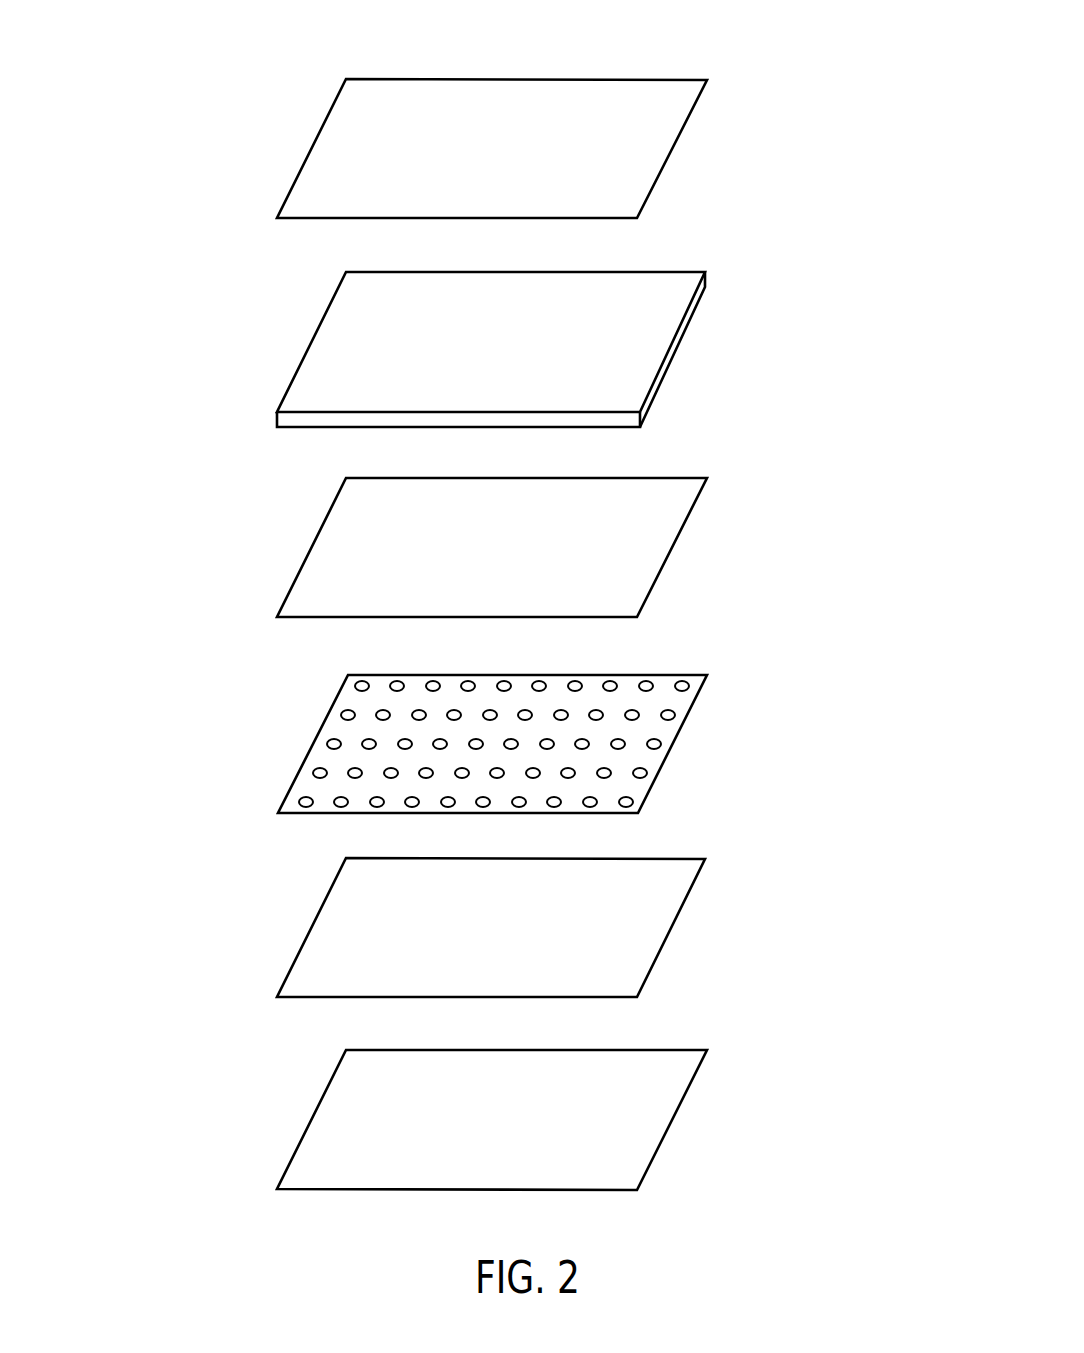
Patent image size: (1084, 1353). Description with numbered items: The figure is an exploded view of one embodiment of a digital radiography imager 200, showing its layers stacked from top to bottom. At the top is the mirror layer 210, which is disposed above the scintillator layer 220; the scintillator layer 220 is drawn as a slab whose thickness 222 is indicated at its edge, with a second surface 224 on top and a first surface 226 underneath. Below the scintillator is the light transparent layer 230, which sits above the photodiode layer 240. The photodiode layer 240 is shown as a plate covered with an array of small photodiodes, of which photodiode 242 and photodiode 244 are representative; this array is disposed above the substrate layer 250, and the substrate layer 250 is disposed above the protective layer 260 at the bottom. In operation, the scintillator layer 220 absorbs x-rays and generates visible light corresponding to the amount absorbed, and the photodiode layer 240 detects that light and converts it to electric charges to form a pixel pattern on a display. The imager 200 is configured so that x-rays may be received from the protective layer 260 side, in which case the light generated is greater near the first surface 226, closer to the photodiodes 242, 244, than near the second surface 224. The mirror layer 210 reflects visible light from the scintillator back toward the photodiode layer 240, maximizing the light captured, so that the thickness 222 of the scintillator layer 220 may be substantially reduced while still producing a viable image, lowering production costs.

The imager 200 is at (250, 40).
The mirror layer 210 is at (627, 128).
The scintillator layer 220 is at (443, 360).
The thickness 222 is at (718, 270).
The second surface 224 is at (622, 335).
The first surface 226 is at (617, 442).
The light transparent layer 230 is at (643, 552).
The photodiode layer 240 is at (578, 727).
The photodiode 242 is at (355, 681).
The photodiode 244 is at (343, 711).
The substrate layer 250 is at (628, 925).
The protective layer 260 is at (623, 1120).